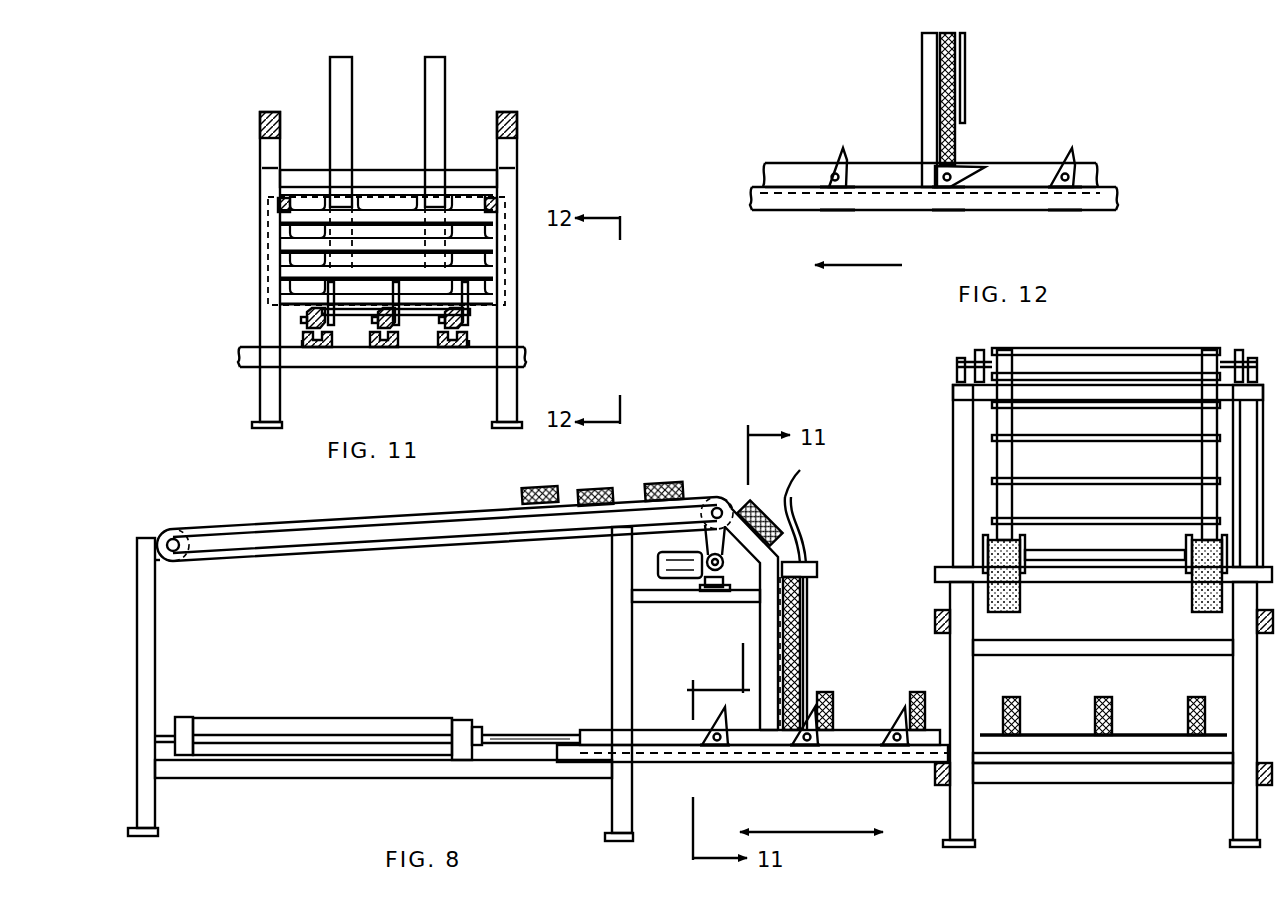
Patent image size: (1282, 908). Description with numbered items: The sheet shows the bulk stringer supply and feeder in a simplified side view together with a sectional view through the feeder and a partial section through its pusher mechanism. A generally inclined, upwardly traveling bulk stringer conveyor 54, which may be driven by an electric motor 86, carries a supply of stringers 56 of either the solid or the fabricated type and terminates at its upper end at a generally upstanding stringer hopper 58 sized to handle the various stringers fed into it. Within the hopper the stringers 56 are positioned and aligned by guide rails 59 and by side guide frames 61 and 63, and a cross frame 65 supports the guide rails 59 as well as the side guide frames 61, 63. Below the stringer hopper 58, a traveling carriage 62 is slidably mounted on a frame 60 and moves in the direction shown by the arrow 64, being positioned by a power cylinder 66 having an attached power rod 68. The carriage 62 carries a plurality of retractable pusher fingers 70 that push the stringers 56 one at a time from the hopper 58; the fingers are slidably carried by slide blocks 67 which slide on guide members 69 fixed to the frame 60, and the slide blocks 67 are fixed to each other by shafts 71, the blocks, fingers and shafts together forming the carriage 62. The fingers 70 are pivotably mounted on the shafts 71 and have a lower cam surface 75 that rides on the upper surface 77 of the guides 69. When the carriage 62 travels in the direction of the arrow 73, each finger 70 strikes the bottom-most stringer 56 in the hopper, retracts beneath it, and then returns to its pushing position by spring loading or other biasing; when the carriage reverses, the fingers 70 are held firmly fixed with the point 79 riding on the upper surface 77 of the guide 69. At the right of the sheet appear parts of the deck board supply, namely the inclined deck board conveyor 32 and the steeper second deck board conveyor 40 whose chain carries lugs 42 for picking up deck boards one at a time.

In FIG. 8, the deck board conveyor 32 is at (1020, 596).
In FIG. 8, the second deck board conveyor 40 is at (1003, 458).
In FIG. 8, the lugs 42 is at (1198, 350).
In FIG. 8, the bulk stringer conveyor 54 is at (290, 524).
In FIG. 11, the stringers 56 is at (402, 222).
In FIG. 12, the stringers 56 is at (952, 72).
In FIG. 8, the stringers 56 is at (558, 482).
In FIG. 8, the stringer hopper 58 is at (818, 518).
In FIG. 11, the guide rails 59 is at (340, 105).
In FIG. 12, the guide rails 59 is at (966, 108).
In FIG. 8, the guide rails 59 is at (803, 535).
In FIG. 11, the frame 60 is at (518, 362).
In FIG. 8, the frame 60 is at (672, 762).
In FIG. 11, the side guide frame 61 is at (508, 260).
In FIG. 8, the side guide frame 61 is at (770, 610).
In FIG. 8, the traveling carriage 62 is at (653, 733).
In FIG. 11, the side guide frame 63 is at (262, 257).
In FIG. 8, the arrow 64 is at (795, 832).
In FIG. 11, the cross frame 65 is at (370, 178).
In FIG. 8, the cross frame 65 is at (818, 566).
In FIG. 8, the power cylinder 66 is at (305, 728).
In FIG. 11, the slide blocks 67 is at (393, 314).
In FIG. 12, the slide blocks 67 is at (1030, 172).
In FIG. 8, the power rod 68 is at (528, 733).
In FIG. 11, the guide members 69 is at (322, 348).
In FIG. 11, the retractable pusher fingers 70 is at (396, 284).
In FIG. 12, the retractable pusher fingers 70 is at (838, 155).
In FIG. 8, the retractable pusher fingers 70 is at (722, 710).
In FIG. 11, the shafts 71 is at (418, 322).
In FIG. 12, the shafts 71 is at (836, 212).
In FIG. 8, the shafts 71 is at (728, 748).
In FIG. 12, the arrow 73 is at (880, 266).
In FIG. 12, the lower cam surface 75 is at (848, 197).
In FIG. 11, the upper surface 77 is at (470, 343).
In FIG. 12, the upper surface 77 is at (1108, 189).
In FIG. 12, the point 79 is at (935, 168).
In FIG. 8, the point 79 is at (712, 750).
In FIG. 8, the electric motor 86 is at (660, 560).